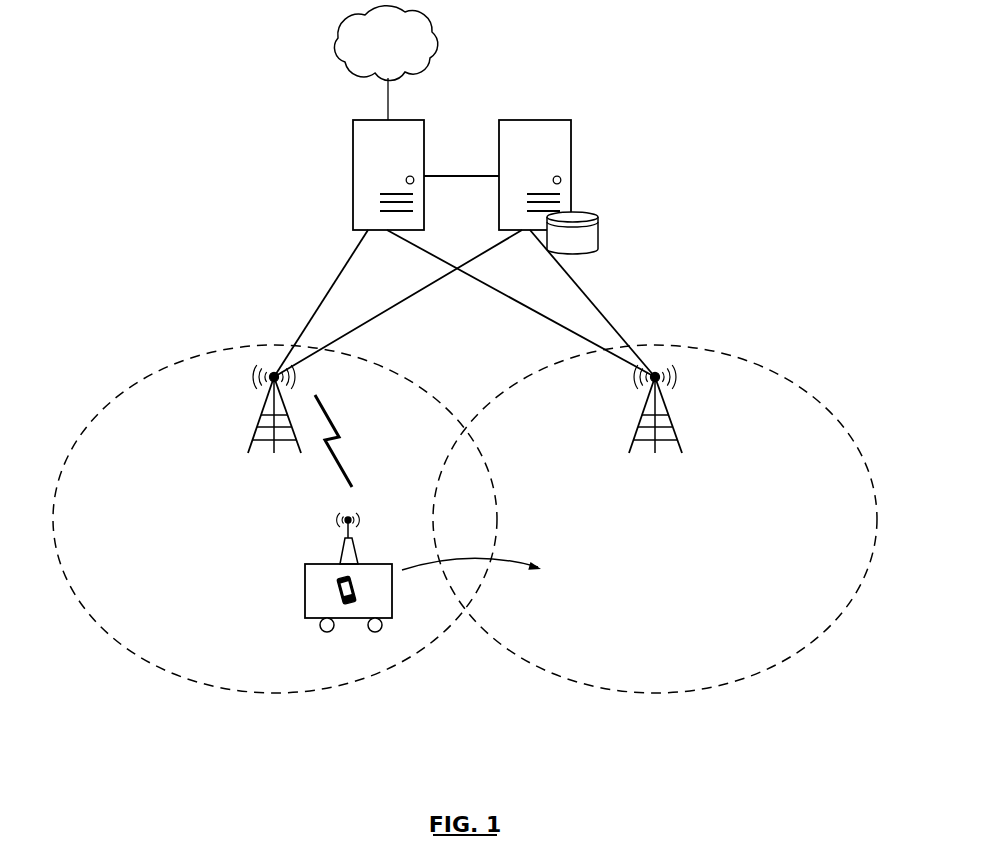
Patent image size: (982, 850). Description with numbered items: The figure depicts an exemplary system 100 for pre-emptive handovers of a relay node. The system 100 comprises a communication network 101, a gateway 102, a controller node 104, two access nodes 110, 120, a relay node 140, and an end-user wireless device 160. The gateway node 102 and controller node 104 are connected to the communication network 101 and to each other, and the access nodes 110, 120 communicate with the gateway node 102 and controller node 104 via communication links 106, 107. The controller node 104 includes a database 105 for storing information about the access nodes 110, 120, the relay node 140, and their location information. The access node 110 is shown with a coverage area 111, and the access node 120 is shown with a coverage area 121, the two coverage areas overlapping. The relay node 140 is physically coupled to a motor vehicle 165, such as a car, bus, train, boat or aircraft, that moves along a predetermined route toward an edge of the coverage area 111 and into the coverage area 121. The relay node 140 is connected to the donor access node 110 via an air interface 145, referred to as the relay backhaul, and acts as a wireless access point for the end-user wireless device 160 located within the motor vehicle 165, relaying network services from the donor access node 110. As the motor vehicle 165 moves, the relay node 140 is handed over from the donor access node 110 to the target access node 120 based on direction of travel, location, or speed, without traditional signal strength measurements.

The system 100 is at (546, 57).
The communication network 101 is at (405, 51).
The gateway node 102 is at (353, 147).
The controller node 104 is at (571, 159).
The database 105 is at (602, 237).
The communication link 106 is at (432, 255).
The communication link 107 is at (412, 297).
The access node 110 is at (258, 433).
The coverage area 111 is at (352, 683).
The access node 120 is at (670, 430).
The coverage area 121 is at (567, 683).
The relay node 140 is at (344, 537).
The air interface 145 is at (342, 433).
The end-user wireless device 160 is at (340, 600).
The motor vehicle 165 is at (307, 567).